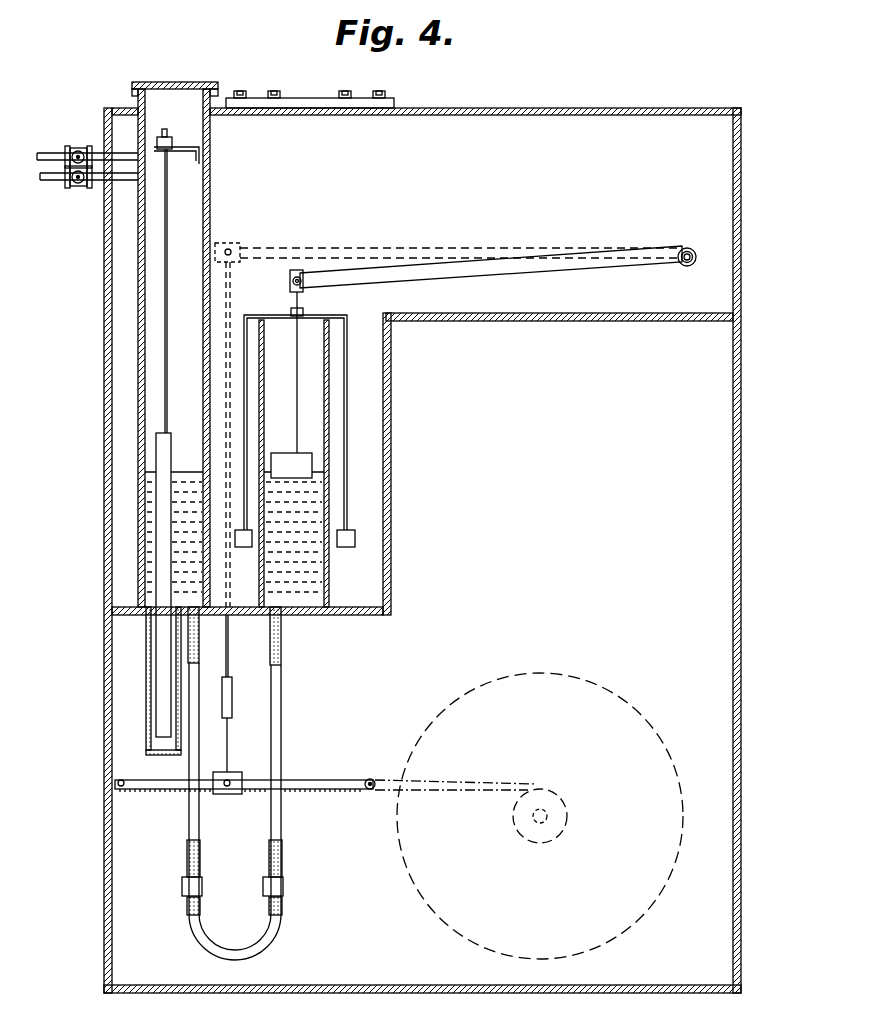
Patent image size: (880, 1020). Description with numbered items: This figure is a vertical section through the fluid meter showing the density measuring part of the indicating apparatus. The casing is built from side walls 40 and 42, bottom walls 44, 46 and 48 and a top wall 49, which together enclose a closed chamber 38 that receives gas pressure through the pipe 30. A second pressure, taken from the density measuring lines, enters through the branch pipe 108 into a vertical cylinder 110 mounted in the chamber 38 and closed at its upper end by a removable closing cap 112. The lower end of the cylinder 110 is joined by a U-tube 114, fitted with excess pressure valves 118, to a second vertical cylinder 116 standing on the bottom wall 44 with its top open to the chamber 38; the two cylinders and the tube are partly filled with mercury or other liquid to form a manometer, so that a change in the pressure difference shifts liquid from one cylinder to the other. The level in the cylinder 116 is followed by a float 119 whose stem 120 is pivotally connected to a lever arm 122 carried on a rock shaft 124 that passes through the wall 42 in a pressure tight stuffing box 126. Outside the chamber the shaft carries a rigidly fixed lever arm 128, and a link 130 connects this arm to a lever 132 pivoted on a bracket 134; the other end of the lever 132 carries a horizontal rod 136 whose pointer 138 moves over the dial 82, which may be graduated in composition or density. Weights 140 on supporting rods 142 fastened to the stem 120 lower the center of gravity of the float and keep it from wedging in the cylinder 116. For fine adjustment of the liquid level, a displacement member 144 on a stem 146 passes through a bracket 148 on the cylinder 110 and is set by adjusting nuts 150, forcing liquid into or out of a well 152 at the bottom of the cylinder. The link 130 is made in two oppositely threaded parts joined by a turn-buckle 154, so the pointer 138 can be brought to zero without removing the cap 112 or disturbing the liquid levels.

The pipe 30 is at (48, 151).
The closed chamber 38 is at (531, 126).
The side wall 40 is at (104, 298).
The side wall 42 is at (741, 178).
The bottom wall 44 is at (350, 616).
The bottom wall 46 is at (392, 413).
The bottom wall 48 is at (521, 322).
The top wall 49 is at (455, 108).
The dial 82 is at (580, 676).
The branch pipe 108 is at (54, 182).
The vertical cylinder 110 is at (211, 192).
The closing cap 112 is at (210, 90).
The U-tube 114 is at (285, 823).
The vertical cylinder 116 is at (330, 368).
The excess pressure valves 118 is at (263, 887).
The float 119 is at (281, 456).
The stem 120 is at (297, 396).
The lever arm 122 is at (370, 280).
The rock shaft 124 is at (683, 267).
The stuffing box 126 is at (695, 264).
The lever arm 128 is at (361, 247).
The link 130 is at (229, 655).
The lever 132 is at (296, 780).
The bracket 134 is at (118, 789).
The horizontal rod 136 is at (371, 778).
The pointer 138 is at (421, 790).
The weights 140 is at (245, 548).
The supporting rods 142 is at (242, 320).
The displacement member 144 is at (171, 433).
The stem 146 is at (168, 318).
The bracket 148 is at (194, 158).
The adjusting nuts 150 is at (157, 153).
The well 152 is at (147, 700).
The turn-buckle 154 is at (232, 703).